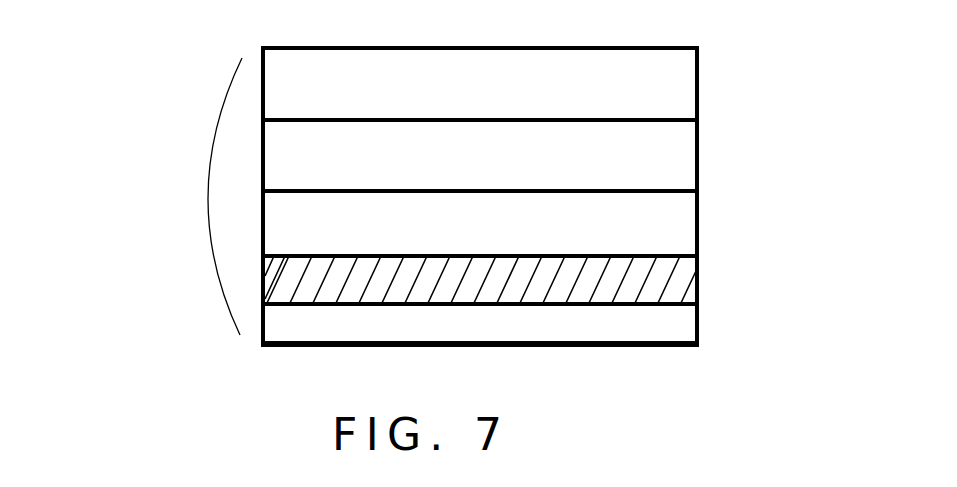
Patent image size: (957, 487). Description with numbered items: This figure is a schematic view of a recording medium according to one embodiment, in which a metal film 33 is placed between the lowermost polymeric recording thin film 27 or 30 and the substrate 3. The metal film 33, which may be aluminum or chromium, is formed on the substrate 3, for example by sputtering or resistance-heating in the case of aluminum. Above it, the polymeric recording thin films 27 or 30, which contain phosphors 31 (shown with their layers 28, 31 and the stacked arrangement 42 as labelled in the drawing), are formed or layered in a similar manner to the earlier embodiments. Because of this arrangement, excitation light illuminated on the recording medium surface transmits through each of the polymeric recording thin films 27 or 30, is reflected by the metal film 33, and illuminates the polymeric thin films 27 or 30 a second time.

The substrate 3 is at (638, 333).
The metal film 33 is at (675, 283).
The layered structure 42 is at (196, 196).
The polymeric recording thin film 27 is at (590, 162).
The polymeric recording thin film 30 is at (682, 93).
The second region 28 is at (476, 162).
The phosphors 31 is at (476, 162).